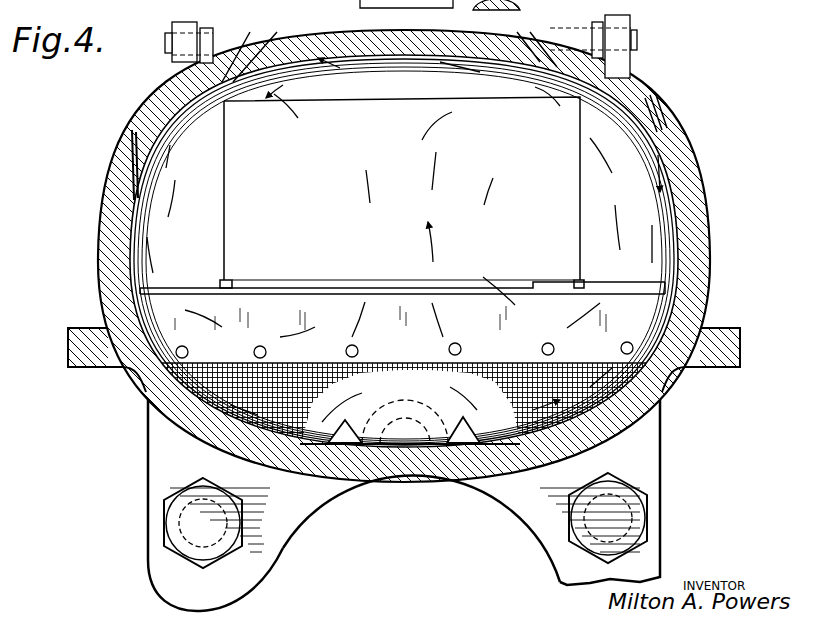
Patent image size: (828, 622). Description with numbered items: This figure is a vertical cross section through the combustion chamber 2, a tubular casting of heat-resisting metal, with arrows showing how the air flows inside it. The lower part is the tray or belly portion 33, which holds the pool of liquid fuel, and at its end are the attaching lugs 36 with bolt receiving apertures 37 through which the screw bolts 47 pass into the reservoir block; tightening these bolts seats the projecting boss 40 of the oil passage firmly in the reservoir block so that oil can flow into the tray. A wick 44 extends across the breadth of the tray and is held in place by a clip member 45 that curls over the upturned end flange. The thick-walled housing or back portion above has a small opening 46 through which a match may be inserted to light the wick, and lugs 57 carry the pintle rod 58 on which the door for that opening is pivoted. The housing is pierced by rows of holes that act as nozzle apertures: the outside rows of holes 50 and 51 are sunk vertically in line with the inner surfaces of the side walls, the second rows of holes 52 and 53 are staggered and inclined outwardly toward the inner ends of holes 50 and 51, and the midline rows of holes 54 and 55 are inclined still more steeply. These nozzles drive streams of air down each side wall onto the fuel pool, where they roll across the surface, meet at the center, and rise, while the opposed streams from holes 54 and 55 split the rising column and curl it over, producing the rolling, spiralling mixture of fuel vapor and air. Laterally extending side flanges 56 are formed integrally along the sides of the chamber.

The combustion chamber 2 is at (200, 233).
The tray or belly portion 33 is at (396, 486).
The attaching lugs 36 is at (560, 563).
The bolt receiving apertures 37 is at (165, 543).
The projecting boss 40 is at (412, 395).
The wick 44 is at (308, 383).
The clip member 45 is at (258, 288).
The small opening 46 is at (402, 186).
The screw bolts 47 is at (196, 517).
The outside row of holes 50 is at (142, 136).
The outside row of holes 51 is at (660, 133).
The second row of holes 52 is at (262, 50).
The second row of holes 53 is at (538, 50).
The third row of holes 54 is at (302, 33).
The third row of holes 55 is at (448, 0).
The side flanges 56 is at (80, 345).
The lugs 57 is at (174, 24).
The pintle rod 58 is at (638, 36).